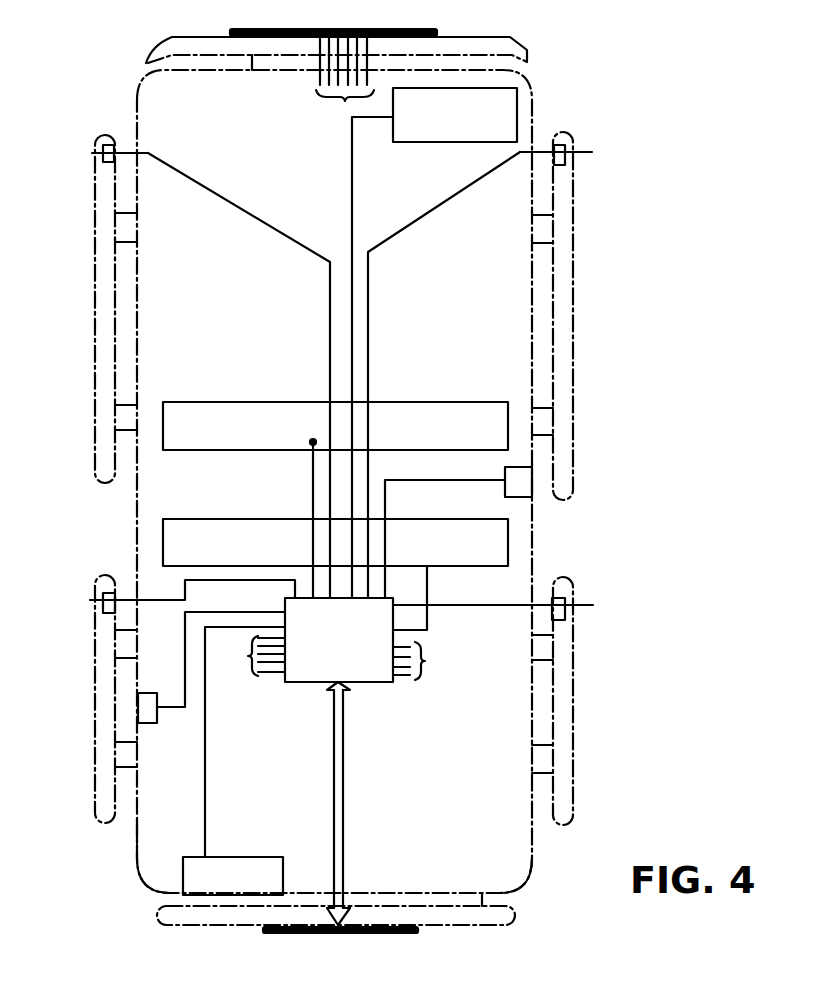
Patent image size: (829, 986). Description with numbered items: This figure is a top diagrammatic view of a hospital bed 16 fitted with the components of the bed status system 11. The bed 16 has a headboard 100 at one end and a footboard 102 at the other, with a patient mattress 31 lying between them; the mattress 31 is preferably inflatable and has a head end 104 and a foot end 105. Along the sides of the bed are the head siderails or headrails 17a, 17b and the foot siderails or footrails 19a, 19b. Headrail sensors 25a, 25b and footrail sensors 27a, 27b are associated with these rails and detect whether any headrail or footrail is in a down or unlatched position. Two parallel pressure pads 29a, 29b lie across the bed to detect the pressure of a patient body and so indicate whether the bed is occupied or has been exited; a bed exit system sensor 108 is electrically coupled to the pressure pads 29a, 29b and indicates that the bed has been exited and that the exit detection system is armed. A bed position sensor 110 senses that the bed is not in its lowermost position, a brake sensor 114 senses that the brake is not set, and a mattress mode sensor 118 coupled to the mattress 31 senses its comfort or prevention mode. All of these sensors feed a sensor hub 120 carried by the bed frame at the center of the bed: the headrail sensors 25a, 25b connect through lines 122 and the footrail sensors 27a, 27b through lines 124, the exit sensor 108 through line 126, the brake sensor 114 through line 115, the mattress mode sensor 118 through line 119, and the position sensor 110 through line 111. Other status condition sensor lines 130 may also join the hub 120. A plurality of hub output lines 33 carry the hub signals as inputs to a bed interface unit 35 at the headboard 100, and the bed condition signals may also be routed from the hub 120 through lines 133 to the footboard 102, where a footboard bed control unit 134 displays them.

The bed status system 11 is at (586, 46).
The hospital bed 16 is at (146, 56).
The headboard 100 is at (192, 37).
The head end 104 is at (160, 71).
The bed interface unit 35 is at (408, 32).
The hub output lines 33 is at (341, 100).
The bed position sensor 110 is at (472, 124).
The line 111 is at (356, 178).
The lines 122 is at (258, 222).
The headrail sensor 25b is at (95, 153).
The headrail sensor 25a is at (578, 157).
The headrail 17b is at (95, 275).
The headrail 17a is at (574, 285).
The pressure pad 29a is at (242, 400).
The pressure pad 29b is at (224, 518).
The line 126 is at (440, 480).
The bed exit system sensor 108 is at (522, 497).
The lines 124 is at (138, 582).
The footrail sensor 27b is at (103, 601).
The footrail sensor 27a is at (595, 611).
The footrail 19b is at (95, 720).
The footrail 19a is at (574, 703).
The line 115 is at (184, 673).
The brake sensor 114 is at (146, 723).
The line 119 is at (206, 809).
The mattress mode sensor 118 is at (233, 876).
The sensor hub 120 is at (352, 646).
The other status condition sensor lines 130 is at (426, 661).
The lines 133 is at (348, 777).
The footboard 102 is at (157, 912).
The footboard bed control unit 134 is at (410, 933).
The foot end 105 is at (512, 893).
The patient mattress 31 is at (135, 838).